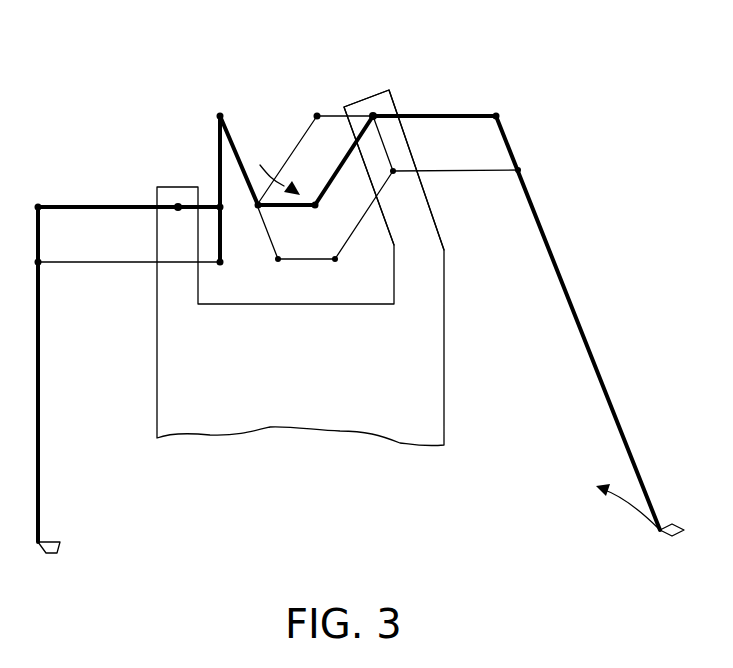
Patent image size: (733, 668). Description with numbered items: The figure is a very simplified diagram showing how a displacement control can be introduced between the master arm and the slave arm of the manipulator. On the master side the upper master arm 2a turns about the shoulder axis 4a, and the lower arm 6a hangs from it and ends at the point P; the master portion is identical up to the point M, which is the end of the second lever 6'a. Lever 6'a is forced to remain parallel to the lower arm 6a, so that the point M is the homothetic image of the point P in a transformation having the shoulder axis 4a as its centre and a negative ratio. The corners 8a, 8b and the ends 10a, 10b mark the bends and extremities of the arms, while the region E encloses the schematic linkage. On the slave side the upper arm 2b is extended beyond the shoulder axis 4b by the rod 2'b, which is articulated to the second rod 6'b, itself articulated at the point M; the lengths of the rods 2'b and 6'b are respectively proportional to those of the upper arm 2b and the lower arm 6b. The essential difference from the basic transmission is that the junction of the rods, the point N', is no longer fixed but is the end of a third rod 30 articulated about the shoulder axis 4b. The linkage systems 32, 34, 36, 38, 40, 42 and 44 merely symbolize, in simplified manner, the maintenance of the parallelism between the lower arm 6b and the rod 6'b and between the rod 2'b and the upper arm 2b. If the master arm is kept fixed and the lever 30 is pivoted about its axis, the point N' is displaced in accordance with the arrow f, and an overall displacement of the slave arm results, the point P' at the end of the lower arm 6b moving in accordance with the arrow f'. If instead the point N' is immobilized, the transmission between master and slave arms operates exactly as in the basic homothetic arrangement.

The upper master arm 2a is at (128, 207).
The upper arm 2b is at (473, 113).
The rod 2'b is at (296, 174).
The shoulder axis 4a is at (178, 207).
The shoulder axis 4b is at (352, 105).
The lower arm 6a is at (38, 408).
The lower arm 6b is at (600, 380).
The second lever 6'a is at (178, 186).
The second rod 6'b is at (241, 131).
The first corner 8a is at (38, 207).
The second corner 8b is at (496, 116).
The first lead tip 10a is at (38, 545).
The second lead tip 10b is at (660, 531).
The third rod 30 is at (373, 116).
The linkage system 32 is at (303, 137).
The linkage system 34 is at (337, 112).
The linkage system 36 is at (305, 260).
The linkage system 38 is at (350, 238).
The linkage system 40 is at (380, 143).
The linkage system 42 is at (447, 172).
The linkage system 44 is at (268, 233).
The point M is at (220, 116).
The point N' is at (344, 160).
The point P is at (57, 517).
The point P' is at (689, 492).
The body region E is at (421, 276).
The arrow f is at (276, 169).
The arrow f' is at (614, 507).